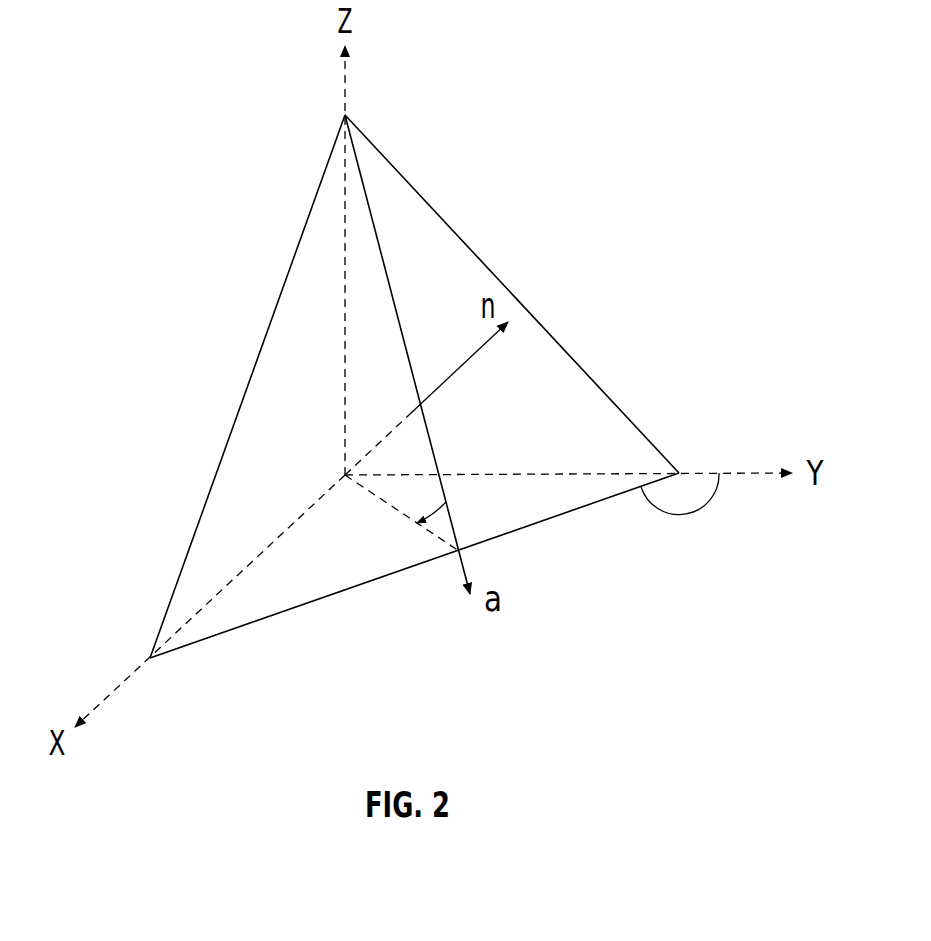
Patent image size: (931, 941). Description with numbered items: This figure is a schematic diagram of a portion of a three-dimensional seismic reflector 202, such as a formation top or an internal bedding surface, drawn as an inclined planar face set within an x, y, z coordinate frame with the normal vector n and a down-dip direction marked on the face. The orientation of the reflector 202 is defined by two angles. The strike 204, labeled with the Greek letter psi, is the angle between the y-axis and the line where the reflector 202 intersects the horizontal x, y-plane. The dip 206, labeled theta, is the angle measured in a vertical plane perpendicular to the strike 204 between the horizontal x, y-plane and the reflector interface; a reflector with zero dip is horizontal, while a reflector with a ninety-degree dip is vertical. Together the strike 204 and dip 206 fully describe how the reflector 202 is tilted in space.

The seismic reflector 202 is at (532, 286).
The strike 204 is at (706, 522).
The dip 206 is at (400, 529).